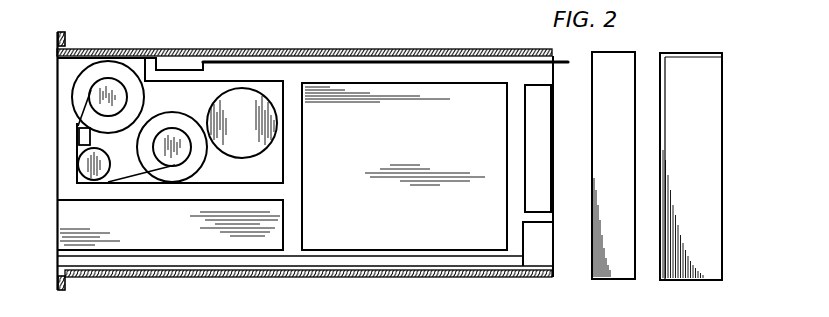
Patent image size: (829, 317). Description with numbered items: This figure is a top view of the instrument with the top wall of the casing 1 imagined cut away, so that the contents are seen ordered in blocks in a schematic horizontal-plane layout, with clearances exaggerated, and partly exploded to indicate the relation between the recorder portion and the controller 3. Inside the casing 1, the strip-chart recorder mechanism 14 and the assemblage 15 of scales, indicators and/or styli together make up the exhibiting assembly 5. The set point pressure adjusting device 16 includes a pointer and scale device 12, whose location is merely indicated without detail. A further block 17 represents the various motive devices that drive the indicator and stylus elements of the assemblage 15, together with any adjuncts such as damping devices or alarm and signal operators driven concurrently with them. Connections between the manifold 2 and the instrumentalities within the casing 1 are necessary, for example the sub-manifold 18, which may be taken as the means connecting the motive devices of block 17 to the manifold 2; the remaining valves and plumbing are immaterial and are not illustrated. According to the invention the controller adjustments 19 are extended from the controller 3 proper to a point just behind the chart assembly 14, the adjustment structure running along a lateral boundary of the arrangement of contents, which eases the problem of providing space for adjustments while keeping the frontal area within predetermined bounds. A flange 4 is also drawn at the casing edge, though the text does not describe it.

The casing 1 is at (413, 48).
The manifold 2 is at (622, 173).
The controller 3 is at (701, 173).
The top flange 4 is at (57, 43).
The exhibiting assembly 5 is at (78, 126).
The pointer and scale device 12 is at (57, 258).
The strip-chart recorder mechanism 14 is at (254, 179).
The assemblage of scales, indicators and/or styli 15 is at (167, 225).
The set point pressure adjusting device 16 is at (549, 252).
The motive devices block 17 is at (359, 225).
The sub-manifold 18 is at (549, 168).
The controller adjustments 19 is at (187, 65).